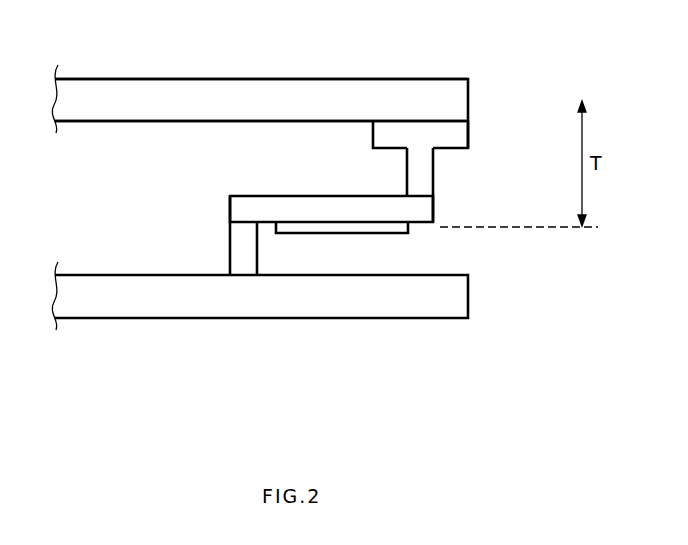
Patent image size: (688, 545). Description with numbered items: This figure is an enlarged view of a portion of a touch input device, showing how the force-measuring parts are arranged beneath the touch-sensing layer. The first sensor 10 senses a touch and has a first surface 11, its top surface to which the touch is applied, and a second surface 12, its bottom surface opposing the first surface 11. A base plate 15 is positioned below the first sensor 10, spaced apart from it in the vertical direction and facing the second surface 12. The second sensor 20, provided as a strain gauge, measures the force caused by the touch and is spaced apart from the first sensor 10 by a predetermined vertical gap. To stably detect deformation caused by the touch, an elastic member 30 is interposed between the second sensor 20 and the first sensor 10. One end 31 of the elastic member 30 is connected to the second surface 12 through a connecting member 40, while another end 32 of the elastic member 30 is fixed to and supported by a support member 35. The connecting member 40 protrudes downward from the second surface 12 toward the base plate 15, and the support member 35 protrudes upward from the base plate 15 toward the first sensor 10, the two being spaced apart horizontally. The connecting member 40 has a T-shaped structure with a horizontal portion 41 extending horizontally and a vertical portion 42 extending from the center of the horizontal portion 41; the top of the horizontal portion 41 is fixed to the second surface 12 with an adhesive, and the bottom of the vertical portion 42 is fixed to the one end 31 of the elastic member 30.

The first sensor 10 is at (227, 88).
The first surface 11 is at (117, 78).
The second surface 12 is at (110, 122).
The base plate 15 is at (258, 308).
The second sensor 20 is at (378, 234).
The elastic member 30 is at (306, 194).
The one end of the elastic member 31 is at (425, 208).
The another end of the elastic member 32 is at (240, 210).
The support member 35 is at (240, 250).
The connecting member 40 is at (466, 159).
The horizontal portion 41 is at (460, 126).
The vertical portion 42 is at (425, 178).